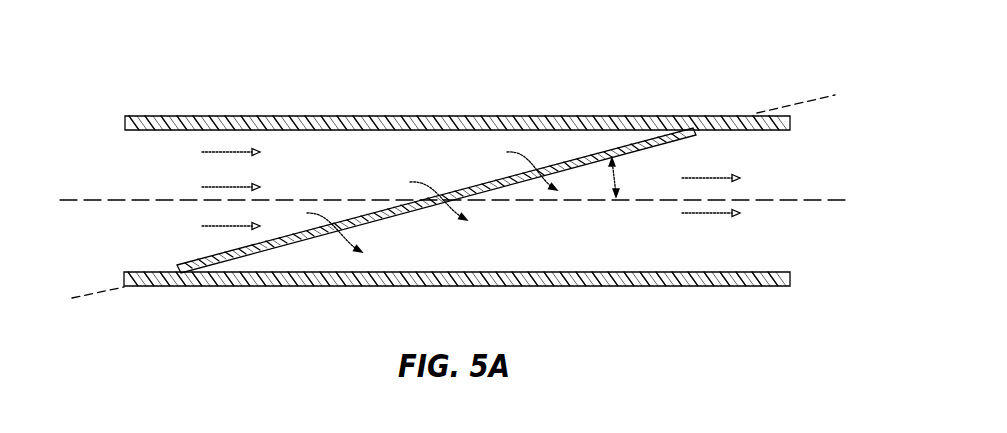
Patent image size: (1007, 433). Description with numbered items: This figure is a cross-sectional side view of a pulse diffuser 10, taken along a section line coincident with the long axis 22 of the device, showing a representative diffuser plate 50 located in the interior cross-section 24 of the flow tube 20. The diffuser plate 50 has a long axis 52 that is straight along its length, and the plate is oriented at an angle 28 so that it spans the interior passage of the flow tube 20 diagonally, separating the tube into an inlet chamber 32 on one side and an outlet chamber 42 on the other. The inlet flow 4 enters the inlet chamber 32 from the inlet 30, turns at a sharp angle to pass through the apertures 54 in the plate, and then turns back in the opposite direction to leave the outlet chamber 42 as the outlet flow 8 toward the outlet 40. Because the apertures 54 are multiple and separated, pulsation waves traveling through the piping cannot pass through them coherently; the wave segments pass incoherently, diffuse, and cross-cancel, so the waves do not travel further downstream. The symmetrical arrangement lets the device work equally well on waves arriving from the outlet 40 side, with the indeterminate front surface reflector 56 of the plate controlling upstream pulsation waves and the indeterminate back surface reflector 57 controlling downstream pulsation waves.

The pulse diffuser 10 is at (666, 72).
The inlet flow 4 is at (203, 187).
The outlet flow 8 is at (748, 192).
The flow tube 20 is at (475, 116).
The diffuser plate 50 is at (286, 244).
The long axis 22 is at (820, 200).
The interior cross-section 24 is at (285, 163).
The angle 28 is at (617, 177).
The inlet 30 is at (130, 225).
The outlet 40 is at (783, 233).
The inlet chamber 32 is at (343, 166).
The outlet chamber 42 is at (562, 259).
The long axis 52 is at (470, 188).
The apertures 54 is at (565, 179).
The indeterminate front surface reflector 56 is at (372, 206).
The indeterminate back surface reflector 57 is at (379, 222).